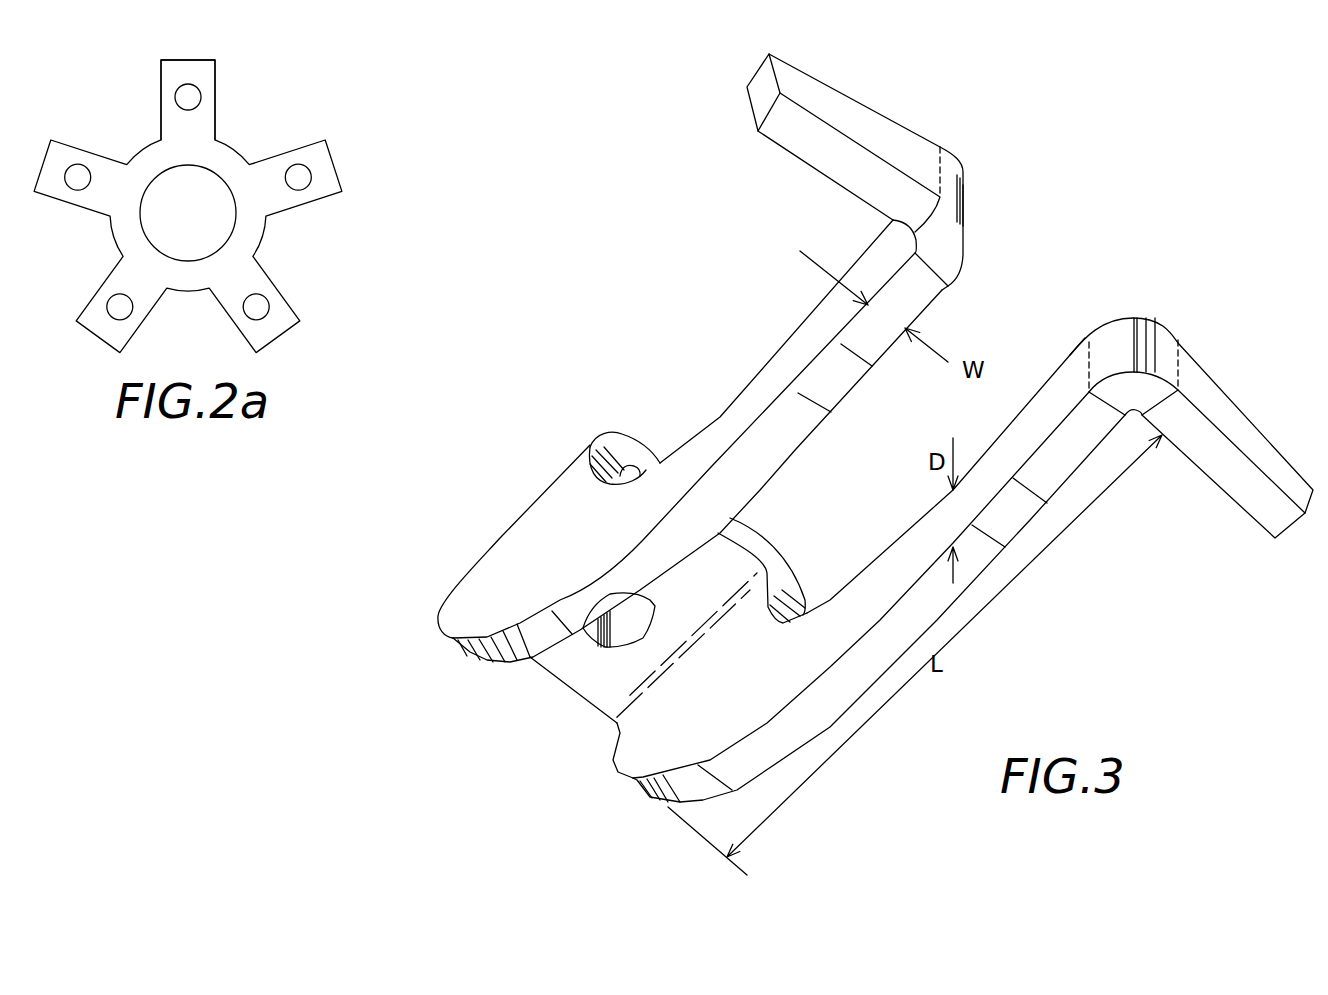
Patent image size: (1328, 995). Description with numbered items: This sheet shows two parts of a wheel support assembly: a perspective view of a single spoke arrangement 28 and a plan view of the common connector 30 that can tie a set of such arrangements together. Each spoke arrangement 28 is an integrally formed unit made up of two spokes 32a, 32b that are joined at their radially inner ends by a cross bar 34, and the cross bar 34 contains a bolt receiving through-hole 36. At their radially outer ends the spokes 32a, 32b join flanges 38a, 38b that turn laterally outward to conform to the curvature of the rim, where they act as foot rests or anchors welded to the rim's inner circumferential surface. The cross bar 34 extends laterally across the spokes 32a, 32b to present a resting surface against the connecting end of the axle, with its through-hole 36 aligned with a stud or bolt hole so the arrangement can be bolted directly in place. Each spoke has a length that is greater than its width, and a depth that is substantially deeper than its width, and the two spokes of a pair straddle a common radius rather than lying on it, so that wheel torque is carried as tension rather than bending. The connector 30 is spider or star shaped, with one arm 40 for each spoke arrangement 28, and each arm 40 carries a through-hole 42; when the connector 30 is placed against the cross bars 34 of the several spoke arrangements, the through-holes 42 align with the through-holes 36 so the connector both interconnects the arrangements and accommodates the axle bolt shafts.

In FIG. 3, the spoke arrangement 28 is at (845, 428).
In FIG. 2A, the common connector 30 is at (188, 187).
In FIG. 3, the spoke 32a is at (715, 417).
In FIG. 3, the spoke 32b is at (927, 593).
In FIG. 3, the cross bar 34 is at (762, 537).
In FIG. 3, the bolt receiving through-hole 36 is at (635, 610).
In FIG. 3, the flange 38a is at (866, 120).
In FIG. 3, the flange 38b is at (1250, 413).
In FIG. 2A, the arm 40 is at (214, 78).
In FIG. 2A, the through-hole 42 is at (200, 102).